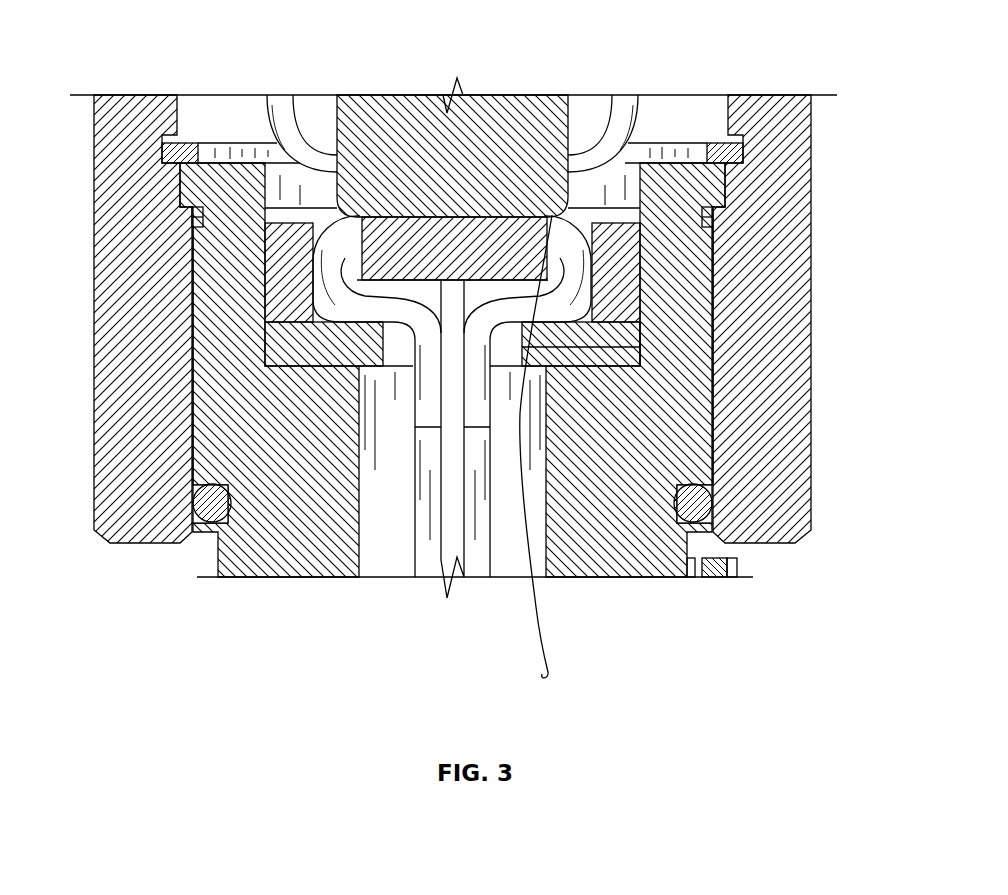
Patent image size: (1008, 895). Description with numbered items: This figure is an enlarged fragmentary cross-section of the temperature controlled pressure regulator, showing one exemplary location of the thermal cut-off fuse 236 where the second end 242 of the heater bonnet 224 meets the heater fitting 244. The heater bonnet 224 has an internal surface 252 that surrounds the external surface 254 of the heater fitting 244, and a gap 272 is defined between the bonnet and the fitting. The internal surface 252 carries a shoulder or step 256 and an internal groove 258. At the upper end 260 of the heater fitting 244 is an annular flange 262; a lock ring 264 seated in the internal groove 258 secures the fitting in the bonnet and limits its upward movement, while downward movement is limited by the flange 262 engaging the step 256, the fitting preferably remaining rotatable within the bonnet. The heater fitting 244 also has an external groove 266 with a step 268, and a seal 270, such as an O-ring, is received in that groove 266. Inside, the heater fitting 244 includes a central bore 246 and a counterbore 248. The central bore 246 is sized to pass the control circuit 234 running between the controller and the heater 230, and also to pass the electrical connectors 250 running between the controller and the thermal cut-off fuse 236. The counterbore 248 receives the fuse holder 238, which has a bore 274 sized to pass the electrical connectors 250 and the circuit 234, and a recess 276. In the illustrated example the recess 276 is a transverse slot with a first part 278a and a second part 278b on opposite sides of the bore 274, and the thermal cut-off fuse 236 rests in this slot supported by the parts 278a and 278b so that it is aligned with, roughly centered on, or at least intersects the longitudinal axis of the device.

The heater bonnet 224 is at (137, 497).
The heater 230 is at (363, 117).
The control circuit 234 is at (548, 672).
The thermal cut-off fuse 236 is at (377, 252).
The fuse holder 238 is at (282, 333).
The second end 242 is at (760, 437).
The heater fitting 244 is at (317, 545).
The central bore 246 is at (360, 490).
The counterbore 248 is at (643, 240).
The electrical connectors 250 is at (432, 573).
The internal surface 252 is at (233, 467).
The external surface 254 is at (193, 428).
The step 256 is at (193, 213).
The internal groove 258 is at (162, 157).
The upper end 260 is at (717, 180).
The annular flange 262 is at (733, 177).
The lock ring 264 is at (187, 157).
The external groove 266 is at (677, 493).
The step 268 is at (687, 577).
The seal 270 is at (715, 495).
The gap 272 is at (715, 400).
The bore 274 is at (642, 352).
The recess 276 is at (598, 297).
The first part 278a is at (300, 348).
The second part 278b is at (573, 333).